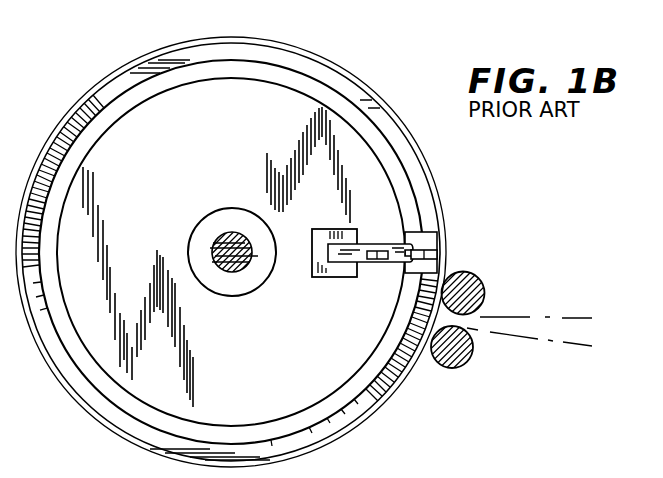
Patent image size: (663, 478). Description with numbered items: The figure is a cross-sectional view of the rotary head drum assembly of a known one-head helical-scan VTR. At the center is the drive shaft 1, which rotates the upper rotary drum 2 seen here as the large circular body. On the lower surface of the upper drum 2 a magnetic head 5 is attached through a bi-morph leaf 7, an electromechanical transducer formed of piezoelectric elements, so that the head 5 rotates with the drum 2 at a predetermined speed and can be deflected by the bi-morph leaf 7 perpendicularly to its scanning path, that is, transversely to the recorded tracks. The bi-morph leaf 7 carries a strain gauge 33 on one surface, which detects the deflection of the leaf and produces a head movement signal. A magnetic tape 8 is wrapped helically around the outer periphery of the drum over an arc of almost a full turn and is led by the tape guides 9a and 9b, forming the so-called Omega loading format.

The drive shaft 1 is at (224, 236).
The upper rotary drum 2 is at (407, 146).
The magnetic head 5 is at (432, 252).
The bi-morph leaf 7 is at (386, 244).
The magnetic tape 8 is at (334, 59).
The tape guide 9a is at (472, 296).
The tape guide 9b is at (455, 368).
The strain gauge 33 is at (381, 262).